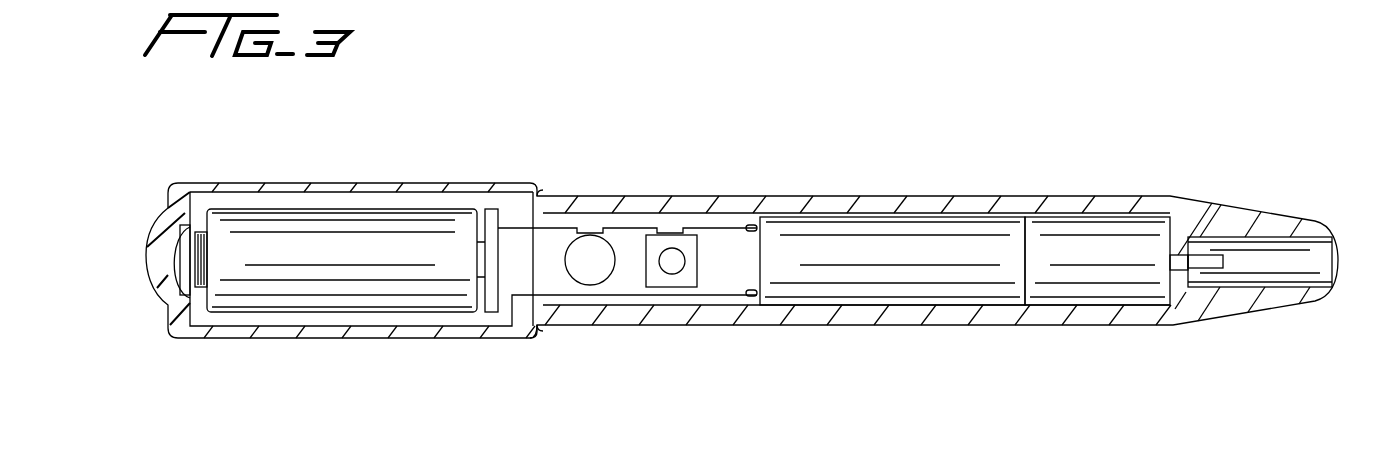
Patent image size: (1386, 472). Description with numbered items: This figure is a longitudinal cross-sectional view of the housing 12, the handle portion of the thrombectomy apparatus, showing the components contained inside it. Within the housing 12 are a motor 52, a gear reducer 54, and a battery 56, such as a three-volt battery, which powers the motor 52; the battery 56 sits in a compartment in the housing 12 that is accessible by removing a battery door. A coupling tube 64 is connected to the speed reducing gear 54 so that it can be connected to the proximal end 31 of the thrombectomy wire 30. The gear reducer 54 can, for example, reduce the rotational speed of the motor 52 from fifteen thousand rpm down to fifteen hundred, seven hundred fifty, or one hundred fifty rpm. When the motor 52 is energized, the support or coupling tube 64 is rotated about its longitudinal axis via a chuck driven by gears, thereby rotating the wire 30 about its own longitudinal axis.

The housing 12 is at (647, 200).
The battery 56 is at (370, 236).
The motor 52 is at (950, 253).
The gear reducer 54 is at (1130, 247).
The coupling tube 64 is at (1180, 262).
The thrombectomy wire 30 is at (1318, 253).
The proximal end 31 is at (1198, 285).